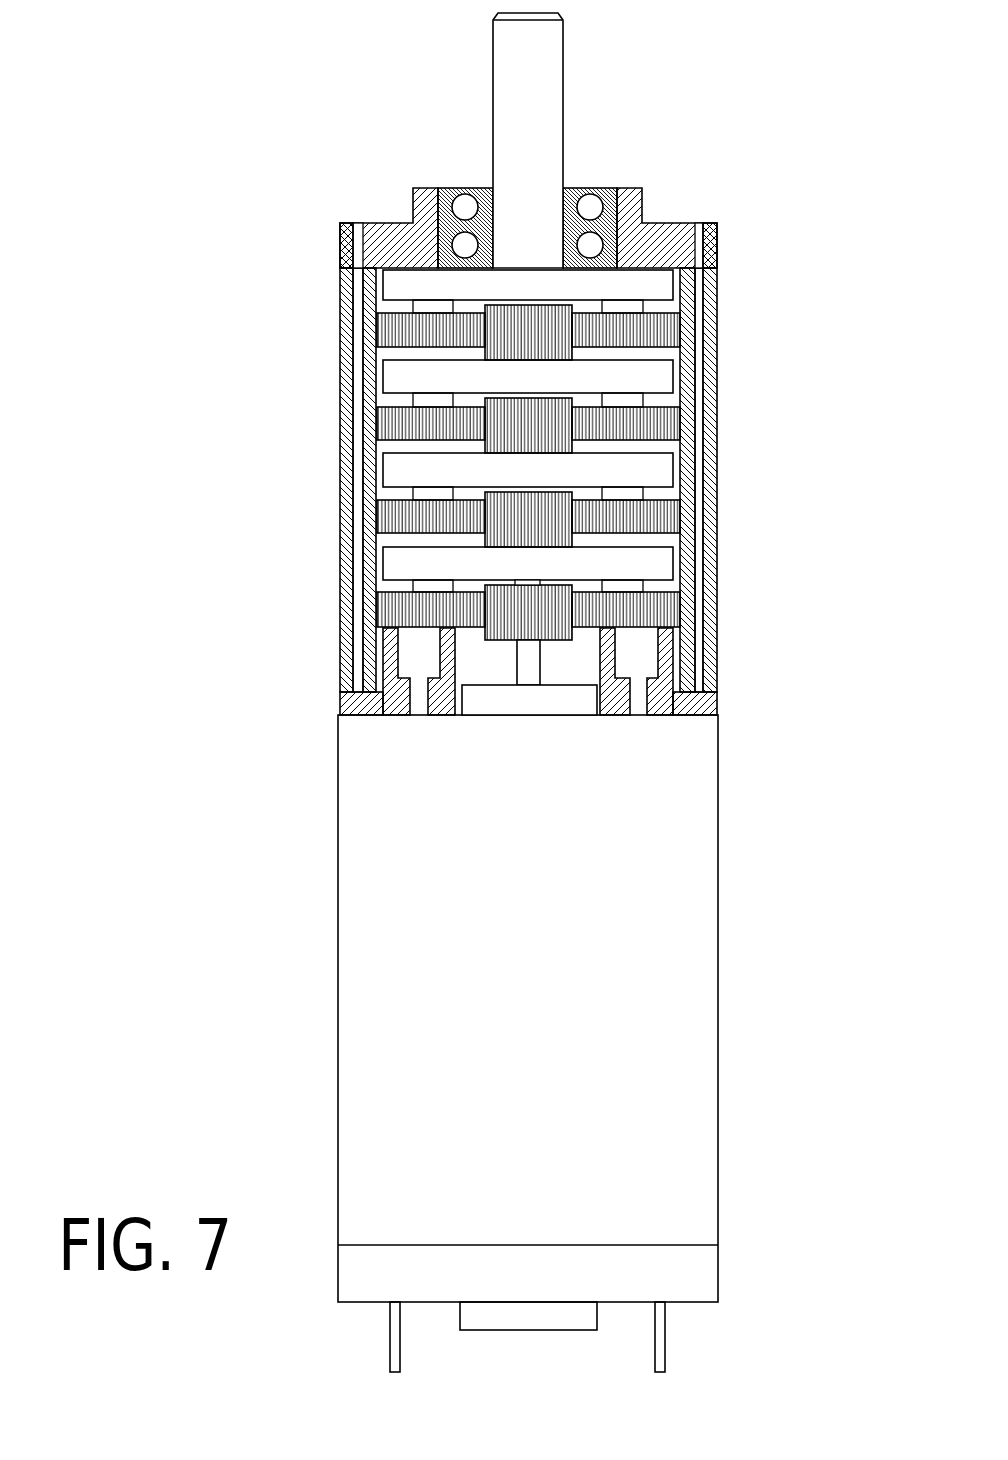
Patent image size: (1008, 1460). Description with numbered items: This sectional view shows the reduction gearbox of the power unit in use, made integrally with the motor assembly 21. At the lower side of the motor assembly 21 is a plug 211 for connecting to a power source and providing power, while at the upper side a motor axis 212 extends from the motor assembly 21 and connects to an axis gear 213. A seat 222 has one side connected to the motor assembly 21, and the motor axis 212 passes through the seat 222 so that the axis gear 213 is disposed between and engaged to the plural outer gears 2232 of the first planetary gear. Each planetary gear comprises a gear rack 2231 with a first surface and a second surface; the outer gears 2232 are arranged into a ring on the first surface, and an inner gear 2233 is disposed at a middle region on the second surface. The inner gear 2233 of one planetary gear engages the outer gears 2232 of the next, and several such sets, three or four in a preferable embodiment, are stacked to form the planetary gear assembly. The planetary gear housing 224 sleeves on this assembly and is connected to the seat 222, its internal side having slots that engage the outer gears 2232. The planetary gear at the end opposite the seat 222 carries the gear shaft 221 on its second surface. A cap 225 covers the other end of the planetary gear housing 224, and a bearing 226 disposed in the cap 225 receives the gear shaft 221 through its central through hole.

The motor assembly 21 is at (690, 925).
The plug 211 is at (657, 1343).
The motor axis 212 is at (523, 658).
The axis gear 213 is at (548, 633).
The gear shaft 221 is at (540, 93).
The seat 222 is at (680, 702).
The gear rack 2231 is at (660, 562).
The outer gears 2232 is at (662, 605).
The inner gear 2233 is at (530, 503).
The planetary gear housing 224 is at (347, 512).
The cap 225 is at (393, 237).
The bearing 226 is at (453, 190).